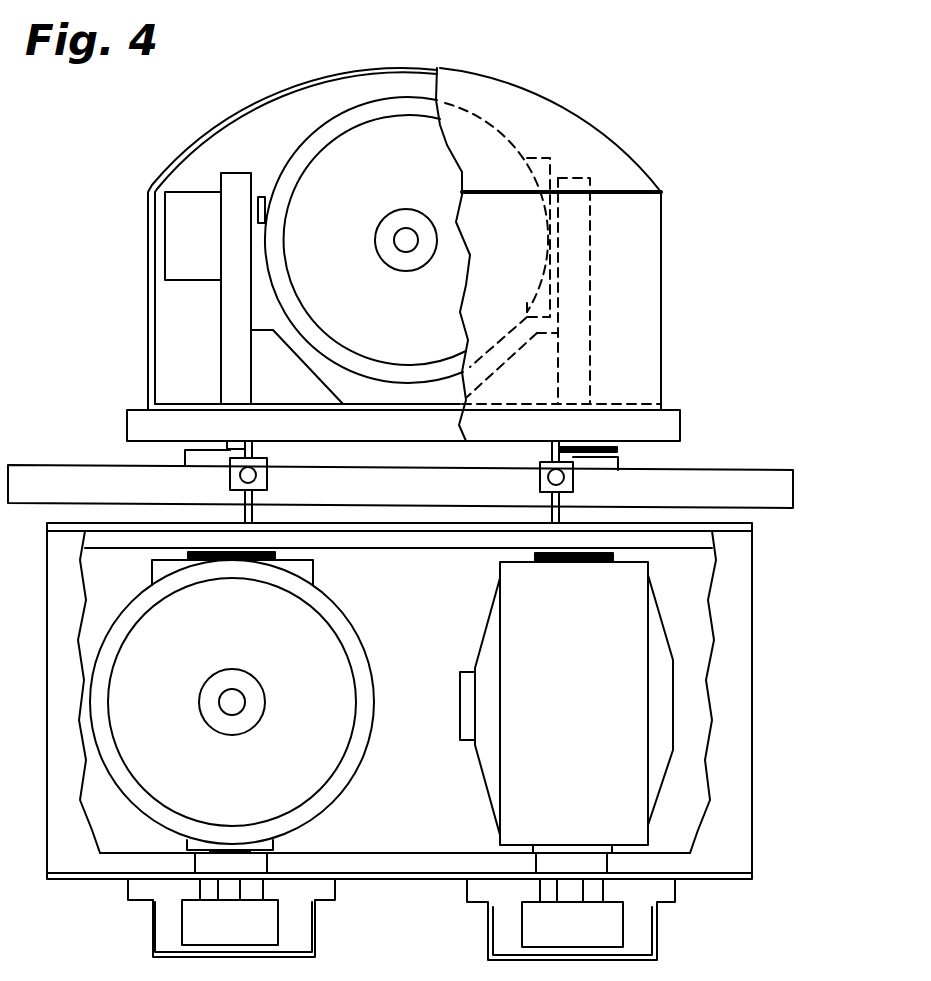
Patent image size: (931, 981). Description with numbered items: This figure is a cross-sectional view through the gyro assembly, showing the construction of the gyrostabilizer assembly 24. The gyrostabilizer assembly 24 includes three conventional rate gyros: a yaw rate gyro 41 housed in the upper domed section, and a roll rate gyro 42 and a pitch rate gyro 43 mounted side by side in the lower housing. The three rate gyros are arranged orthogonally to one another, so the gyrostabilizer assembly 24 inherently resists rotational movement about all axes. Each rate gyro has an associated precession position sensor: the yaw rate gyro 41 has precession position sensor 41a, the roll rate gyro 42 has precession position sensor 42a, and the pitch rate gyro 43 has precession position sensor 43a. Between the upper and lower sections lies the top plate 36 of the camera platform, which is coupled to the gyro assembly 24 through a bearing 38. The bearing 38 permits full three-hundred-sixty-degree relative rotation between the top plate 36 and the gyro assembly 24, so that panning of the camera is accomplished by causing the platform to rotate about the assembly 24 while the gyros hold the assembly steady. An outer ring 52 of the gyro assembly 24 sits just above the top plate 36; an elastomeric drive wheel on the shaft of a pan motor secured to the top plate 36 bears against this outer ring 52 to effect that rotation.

The gyrostabilizer assembly 24 is at (662, 312).
The yaw rate gyro 41 is at (357, 138).
The precession position sensor 41a is at (178, 240).
The outer ring 52 is at (675, 417).
The bearing 38 is at (573, 480).
The top plate 36 is at (742, 480).
The roll rate gyro 42 is at (296, 627).
The precession position sensor 42a is at (203, 932).
The pitch rate gyro 43 is at (525, 763).
The precession position sensor 43a is at (537, 932).